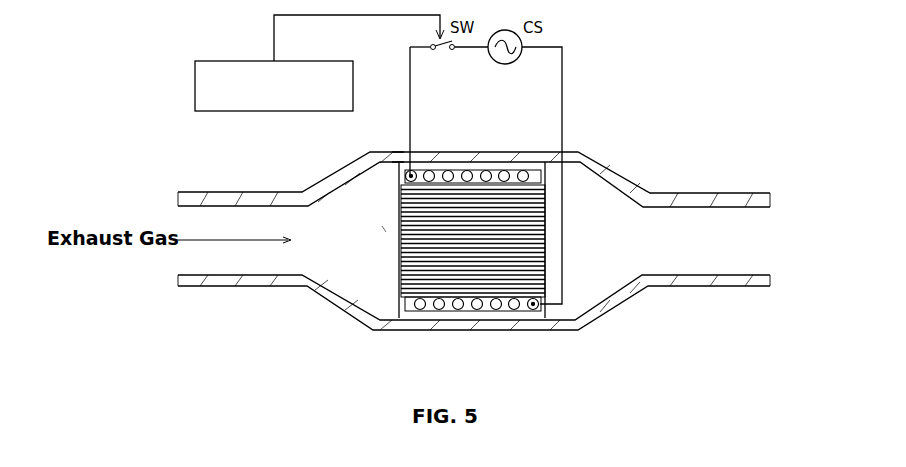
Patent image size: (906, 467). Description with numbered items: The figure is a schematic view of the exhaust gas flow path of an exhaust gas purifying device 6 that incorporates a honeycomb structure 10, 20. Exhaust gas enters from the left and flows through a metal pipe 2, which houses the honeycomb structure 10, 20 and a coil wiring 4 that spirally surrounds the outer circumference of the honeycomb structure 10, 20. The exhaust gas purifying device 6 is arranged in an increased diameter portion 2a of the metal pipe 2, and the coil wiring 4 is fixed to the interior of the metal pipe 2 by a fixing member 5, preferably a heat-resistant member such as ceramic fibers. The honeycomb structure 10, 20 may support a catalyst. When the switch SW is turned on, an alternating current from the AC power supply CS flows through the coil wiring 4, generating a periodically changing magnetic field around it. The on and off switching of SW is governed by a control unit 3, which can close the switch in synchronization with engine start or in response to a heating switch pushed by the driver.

The metal pipe 2 is at (266, 190).
The increased diameter portion 2a is at (397, 157).
The control unit 3 is at (196, 55).
The coil wiring 4 is at (430, 165).
The fixing member 5 is at (535, 160).
The exhaust gas purifying device 6 is at (381, 226).
The honeycomb structure 10 is at (392, 255).
The honeycomb structure 20 is at (395, 254).